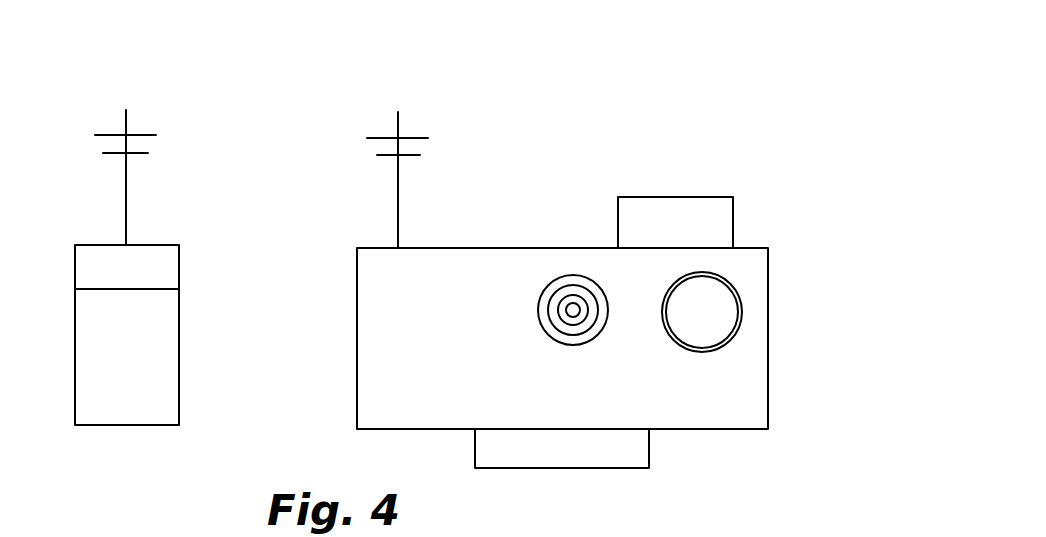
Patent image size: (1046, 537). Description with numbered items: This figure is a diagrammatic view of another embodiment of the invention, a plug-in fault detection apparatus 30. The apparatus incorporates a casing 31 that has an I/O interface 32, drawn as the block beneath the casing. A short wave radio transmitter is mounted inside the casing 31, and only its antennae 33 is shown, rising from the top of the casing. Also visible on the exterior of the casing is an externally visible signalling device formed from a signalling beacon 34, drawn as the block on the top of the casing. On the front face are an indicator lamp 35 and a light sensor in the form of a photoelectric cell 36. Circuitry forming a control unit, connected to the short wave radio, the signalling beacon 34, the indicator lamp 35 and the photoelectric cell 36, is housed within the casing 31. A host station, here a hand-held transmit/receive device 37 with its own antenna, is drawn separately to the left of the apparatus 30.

The plug-in fault detection apparatus 30 is at (760, 185).
The casing 31 is at (755, 380).
The I/O interface 32 is at (635, 453).
The antennae 33 is at (406, 117).
The signalling beacon 34 is at (653, 210).
The indicator lamp 35 is at (712, 306).
The photoelectric cell 36 is at (558, 320).
The hand-held transmit/receive device 37 is at (120, 400).